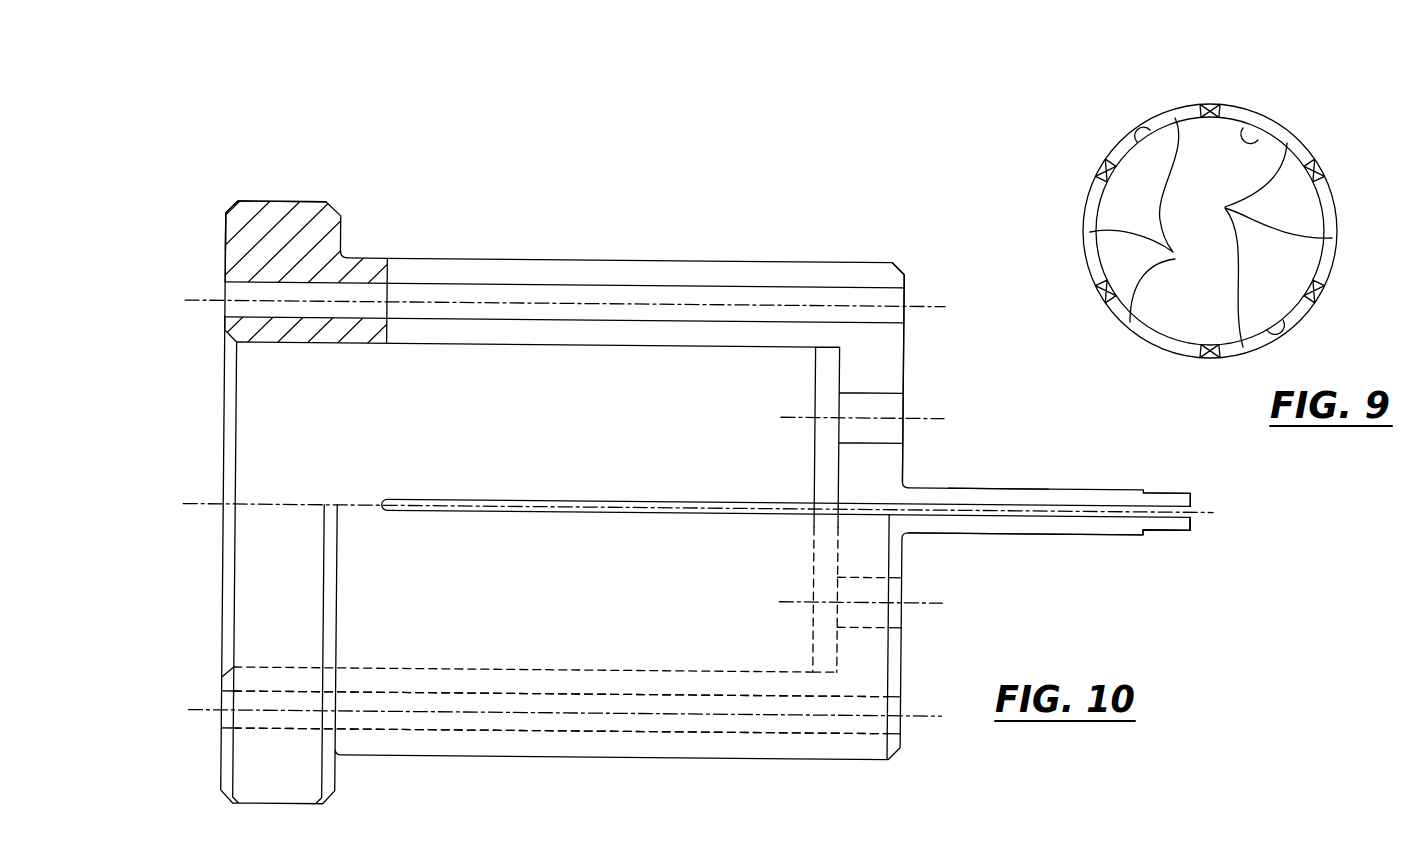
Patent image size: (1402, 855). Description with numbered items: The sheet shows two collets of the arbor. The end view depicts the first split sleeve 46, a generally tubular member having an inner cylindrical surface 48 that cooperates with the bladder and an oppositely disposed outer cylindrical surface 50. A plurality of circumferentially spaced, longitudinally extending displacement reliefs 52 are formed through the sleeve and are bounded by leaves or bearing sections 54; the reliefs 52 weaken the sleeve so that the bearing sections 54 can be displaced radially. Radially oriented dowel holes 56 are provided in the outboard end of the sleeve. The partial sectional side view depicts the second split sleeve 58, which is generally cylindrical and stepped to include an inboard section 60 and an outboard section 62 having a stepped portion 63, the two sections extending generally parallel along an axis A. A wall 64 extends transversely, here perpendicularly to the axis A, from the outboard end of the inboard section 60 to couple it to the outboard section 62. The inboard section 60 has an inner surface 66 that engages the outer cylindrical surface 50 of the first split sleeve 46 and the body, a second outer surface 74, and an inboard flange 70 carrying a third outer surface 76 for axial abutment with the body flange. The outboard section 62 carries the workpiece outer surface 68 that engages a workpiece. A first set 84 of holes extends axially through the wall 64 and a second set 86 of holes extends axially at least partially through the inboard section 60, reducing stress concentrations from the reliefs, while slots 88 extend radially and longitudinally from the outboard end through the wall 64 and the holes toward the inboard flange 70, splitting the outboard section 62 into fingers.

In FIG. 9, the first split sleeve 46 is at (1293, 66).
In FIG. 9, the inner cylindrical surface 48 is at (1258, 138).
In FIG. 9, the outer cylindrical surface 50 is at (1308, 146).
In FIG. 9, the displacement reliefs 52 is at (1222, 110).
In FIG. 9, the bearing sections 54 is at (1228, 208).
In FIG. 9, the dowel holes 56 is at (1148, 122).
In FIG. 10, the second split sleeve 58 is at (905, 241).
In FIG. 10, the inboard section 60 is at (650, 258).
In FIG. 10, the outboard section 62 is at (1045, 488).
In FIG. 10, the stepped portion 63 is at (1165, 492).
In FIG. 10, the wall 64 is at (905, 352).
In FIG. 10, the inner surface 66 is at (540, 346).
In FIG. 10, the workpiece outer surface 68 is at (988, 486).
In FIG. 10, the inboard flange 70 is at (298, 215).
In FIG. 10, the second outer surface 74 is at (480, 258).
In FIG. 10, the third outer surface 76 is at (258, 200).
In FIG. 10, the first set of holes 84 is at (904, 418).
In FIG. 10, the second set of holes 86 is at (222, 302).
In FIG. 10, the slots 88 is at (752, 278).
In FIG. 10, the axis A is at (213, 505).